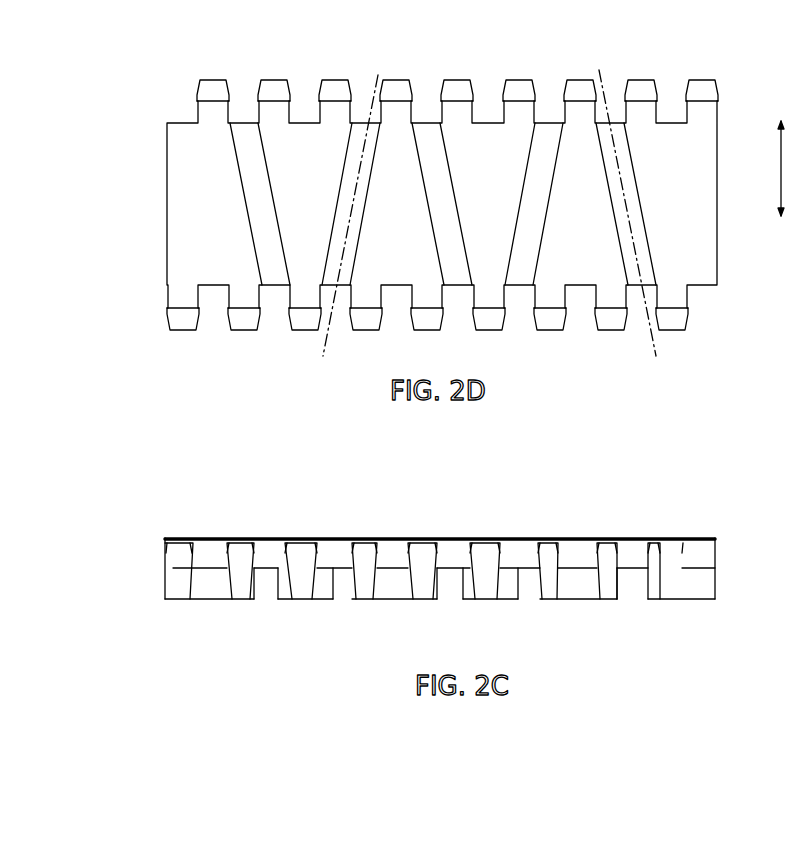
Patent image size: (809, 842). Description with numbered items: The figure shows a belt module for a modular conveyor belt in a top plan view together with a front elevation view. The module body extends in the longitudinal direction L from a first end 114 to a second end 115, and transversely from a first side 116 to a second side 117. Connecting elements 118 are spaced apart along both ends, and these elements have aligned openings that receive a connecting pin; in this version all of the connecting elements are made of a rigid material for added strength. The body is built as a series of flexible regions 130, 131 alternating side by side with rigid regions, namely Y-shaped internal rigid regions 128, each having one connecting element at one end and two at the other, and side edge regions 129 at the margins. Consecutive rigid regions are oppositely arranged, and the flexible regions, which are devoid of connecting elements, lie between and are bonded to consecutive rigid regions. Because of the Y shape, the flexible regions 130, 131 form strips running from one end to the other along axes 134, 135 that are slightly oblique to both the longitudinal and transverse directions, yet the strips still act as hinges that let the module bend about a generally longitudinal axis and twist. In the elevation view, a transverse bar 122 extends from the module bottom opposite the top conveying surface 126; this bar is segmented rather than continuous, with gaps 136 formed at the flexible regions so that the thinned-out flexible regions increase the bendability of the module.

In FIG. 2D, the first end 114 is at (643, 79).
In FIG. 2D, the second end 115 is at (548, 331).
In FIG. 2D, the first side 116 is at (718, 165).
In FIG. 2D, the second side 117 is at (167, 192).
In FIG. 2C, the connecting elements 118 is at (670, 590).
In FIG. 2C, the transverse bar 122 is at (568, 593).
In FIG. 2C, the top conveying surface 126 is at (519, 538).
In FIG. 2D, the internal rigid regions 128 is at (466, 113).
In FIG. 2D, the side edge regions 129 is at (212, 276).
In FIG. 2D, the flexible region 130 is at (244, 131).
In FIG. 2D, the flexible region 131 is at (518, 278).
In FIG. 2D, the axis 134 is at (654, 344).
In FIG. 2D, the axis 135 is at (325, 349).
In FIG. 2C, the gaps 136 is at (263, 593).
In FIG. 2D, the longitudinal direction L is at (782, 176).